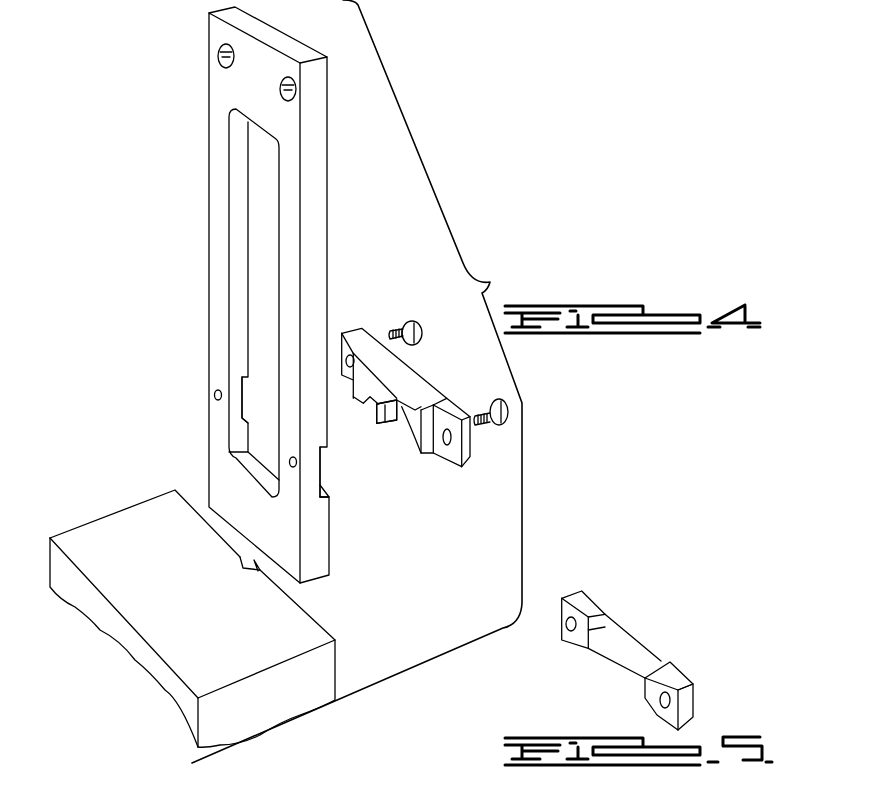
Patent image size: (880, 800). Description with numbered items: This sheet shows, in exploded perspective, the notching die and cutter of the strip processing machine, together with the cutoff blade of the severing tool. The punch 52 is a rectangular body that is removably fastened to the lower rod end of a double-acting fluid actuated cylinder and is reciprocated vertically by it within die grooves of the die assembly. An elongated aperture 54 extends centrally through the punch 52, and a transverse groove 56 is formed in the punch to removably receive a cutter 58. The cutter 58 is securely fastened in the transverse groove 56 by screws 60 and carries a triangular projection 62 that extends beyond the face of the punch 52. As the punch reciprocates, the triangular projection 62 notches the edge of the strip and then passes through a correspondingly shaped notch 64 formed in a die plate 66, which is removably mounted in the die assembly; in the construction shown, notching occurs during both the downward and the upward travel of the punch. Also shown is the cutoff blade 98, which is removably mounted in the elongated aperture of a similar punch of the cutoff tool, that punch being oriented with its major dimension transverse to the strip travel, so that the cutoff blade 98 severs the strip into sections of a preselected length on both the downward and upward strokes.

In FIG. 4, the punch 52 is at (318, 210).
In FIG. 4, the elongated aperture 54 is at (238, 233).
In FIG. 4, the transverse groove 56 is at (242, 413).
In FIG. 4, the cutter 58 is at (404, 382).
In FIG. 4, the screws 60 is at (438, 310).
In FIG. 4, the triangular projection 62 is at (382, 423).
In FIG. 4, the notch 64 is at (257, 570).
In FIG. 4, the die plate 66 is at (298, 628).
In FIG. 5, the cutoff blade 98 is at (627, 650).